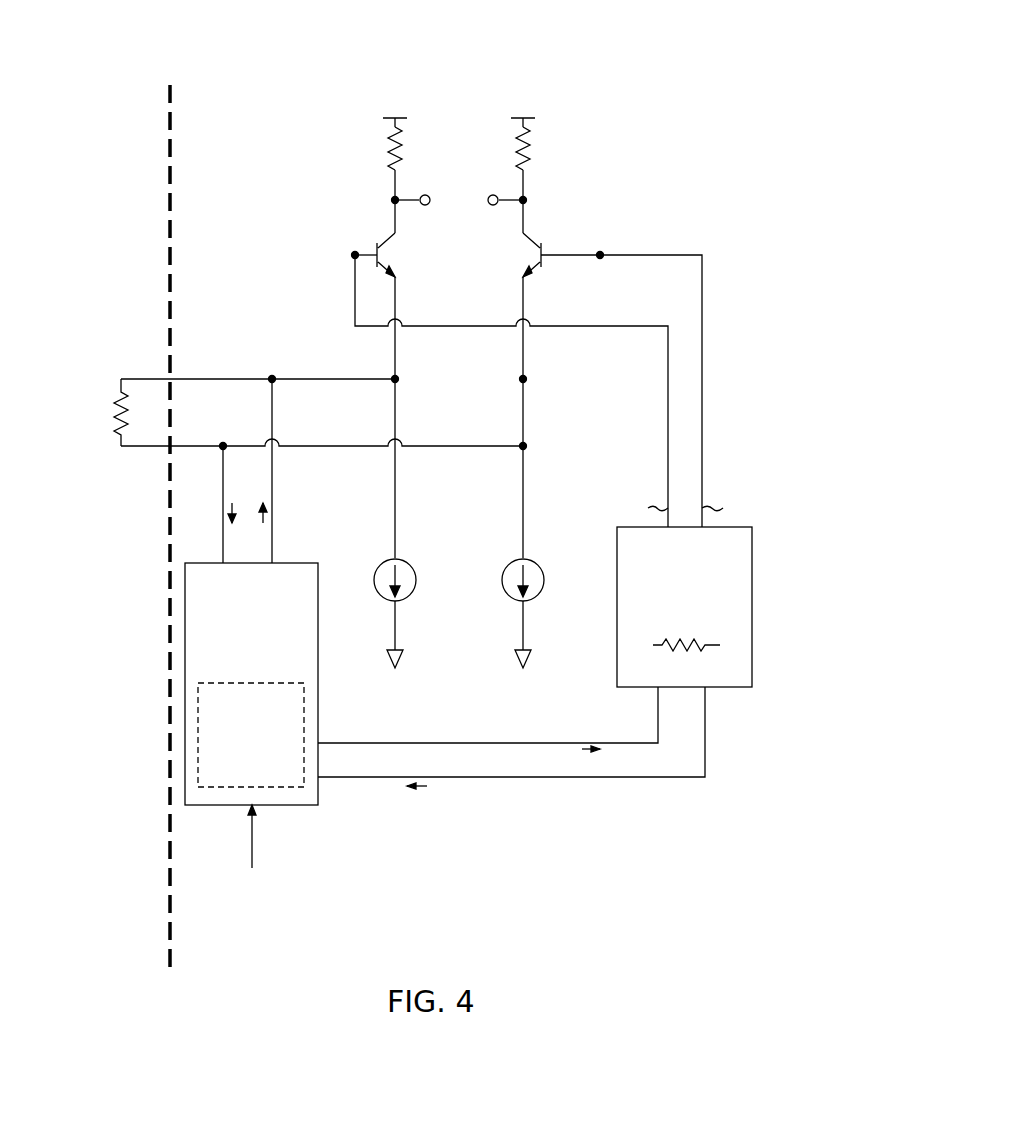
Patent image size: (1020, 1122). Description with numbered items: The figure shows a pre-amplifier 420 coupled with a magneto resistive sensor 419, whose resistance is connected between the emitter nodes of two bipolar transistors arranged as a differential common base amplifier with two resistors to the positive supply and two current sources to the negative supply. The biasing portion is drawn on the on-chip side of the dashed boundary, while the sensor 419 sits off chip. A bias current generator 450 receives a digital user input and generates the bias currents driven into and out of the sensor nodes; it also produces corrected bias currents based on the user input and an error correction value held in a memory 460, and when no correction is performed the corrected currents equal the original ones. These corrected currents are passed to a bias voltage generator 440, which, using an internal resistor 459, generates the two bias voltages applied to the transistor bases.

The pre-amplifier 420 is at (640, 78).
The magneto resistive sensor 419 is at (121, 385).
The bias current generator 450 is at (251, 684).
The memory 460 is at (251, 735).
The bias voltage generator 440 is at (649, 607).
The internal resistor 459 is at (657, 645).